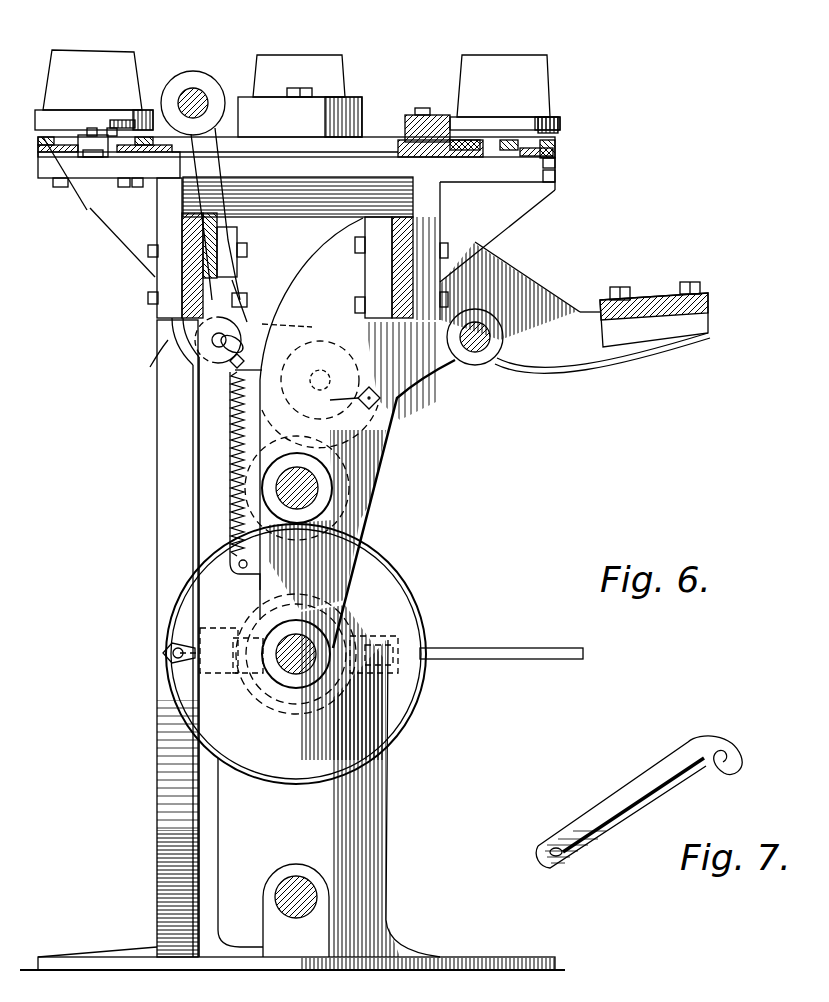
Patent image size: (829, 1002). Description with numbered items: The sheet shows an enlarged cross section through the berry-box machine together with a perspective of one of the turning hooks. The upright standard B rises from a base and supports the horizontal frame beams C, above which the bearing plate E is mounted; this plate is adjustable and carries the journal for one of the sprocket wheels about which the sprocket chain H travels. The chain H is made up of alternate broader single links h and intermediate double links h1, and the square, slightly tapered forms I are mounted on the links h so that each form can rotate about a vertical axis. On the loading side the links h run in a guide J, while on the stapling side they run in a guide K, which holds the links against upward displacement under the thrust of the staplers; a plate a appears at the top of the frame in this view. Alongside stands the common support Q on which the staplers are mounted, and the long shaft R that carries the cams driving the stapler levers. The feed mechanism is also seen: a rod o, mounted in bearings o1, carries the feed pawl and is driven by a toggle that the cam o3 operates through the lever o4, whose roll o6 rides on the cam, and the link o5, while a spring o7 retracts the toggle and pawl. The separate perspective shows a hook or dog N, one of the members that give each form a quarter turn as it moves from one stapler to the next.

In FIG. 6, the form I is at (122, 41).
In FIG. 6, the sprocket chain H is at (450, 133).
In FIG. 6, the guide K is at (640, 114).
In FIG. 6, the single link h is at (548, 152).
In FIG. 6, the double link h1 is at (100, 135).
In FIG. 6, the top plate a is at (333, 143).
In FIG. 6, the bearing plate E is at (317, 172).
In FIG. 6, the beam C is at (150, 289).
In FIG. 6, the guide J is at (86, 214).
In FIG. 6, the rod o is at (198, 97).
In FIG. 6, the bearing o1 is at (188, 78).
In FIG. 6, the link o5 is at (225, 275).
In FIG. 6, the roll o6 is at (322, 340).
In FIG. 6, the spring o7 is at (262, 486).
In FIG. 6, the cam o3 is at (360, 464).
In FIG. 6, the lever o4 is at (262, 324).
In FIG. 6, the shaft R is at (333, 486).
In FIG. 6, the support Q is at (710, 297).
In FIG. 6, the standard B is at (372, 833).
In FIG. 7, the hook N is at (637, 745).